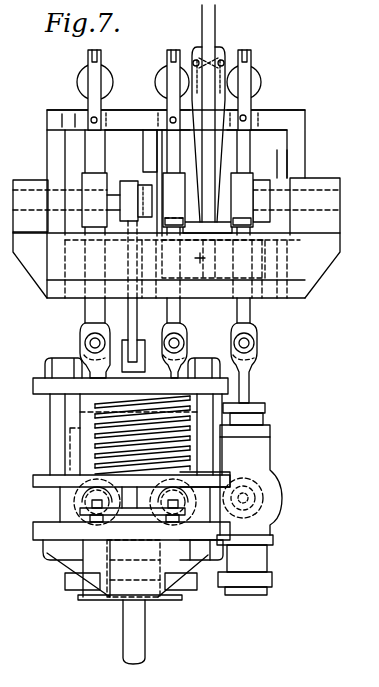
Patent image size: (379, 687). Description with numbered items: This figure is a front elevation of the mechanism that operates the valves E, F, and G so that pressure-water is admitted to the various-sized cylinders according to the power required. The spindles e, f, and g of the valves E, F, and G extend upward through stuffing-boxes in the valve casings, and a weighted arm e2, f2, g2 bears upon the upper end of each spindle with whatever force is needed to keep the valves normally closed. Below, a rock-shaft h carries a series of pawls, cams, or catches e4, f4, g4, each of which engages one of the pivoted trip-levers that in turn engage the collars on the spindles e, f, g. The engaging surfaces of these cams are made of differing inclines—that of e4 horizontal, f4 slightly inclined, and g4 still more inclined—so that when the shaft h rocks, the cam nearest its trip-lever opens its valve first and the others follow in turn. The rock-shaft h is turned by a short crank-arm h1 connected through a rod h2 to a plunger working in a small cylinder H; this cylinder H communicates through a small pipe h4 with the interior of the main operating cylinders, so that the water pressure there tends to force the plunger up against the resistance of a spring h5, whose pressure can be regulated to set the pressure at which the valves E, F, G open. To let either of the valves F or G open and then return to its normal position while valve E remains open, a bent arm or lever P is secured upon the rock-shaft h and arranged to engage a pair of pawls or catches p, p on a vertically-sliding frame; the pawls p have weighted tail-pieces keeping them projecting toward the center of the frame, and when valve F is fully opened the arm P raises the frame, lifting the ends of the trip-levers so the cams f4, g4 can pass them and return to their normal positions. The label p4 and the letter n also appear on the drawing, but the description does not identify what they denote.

The bent arm or lever P is at (215, 17).
The pawls or catches p is at (209, 130).
The slide guide p4 is at (194, 258).
The weighted arm e2 is at (101, 55).
The weighted arm f2 is at (167, 55).
The weighted arm g2 is at (251, 56).
The pawl, cam, or catch e4 is at (84, 180).
The valve-spindle e is at (94, 182).
The valve-spindle f is at (171, 183).
The pawl, cam, or catch f4 is at (171, 202).
The valve-spindle g is at (242, 182).
The pawl, cam, or catch g4 is at (242, 202).
The rock-shaft h is at (120, 181).
The short crank-arm h1 is at (125, 218).
The rod h2 is at (128, 317).
The spring h5 is at (85, 413).
The small pipe h4 is at (145, 636).
The valve G is at (249, 499).
The small cylinder H is at (133, 570).
The valve E is at (78, 588).
The valve F is at (185, 590).
The frame n is at (30, 500).